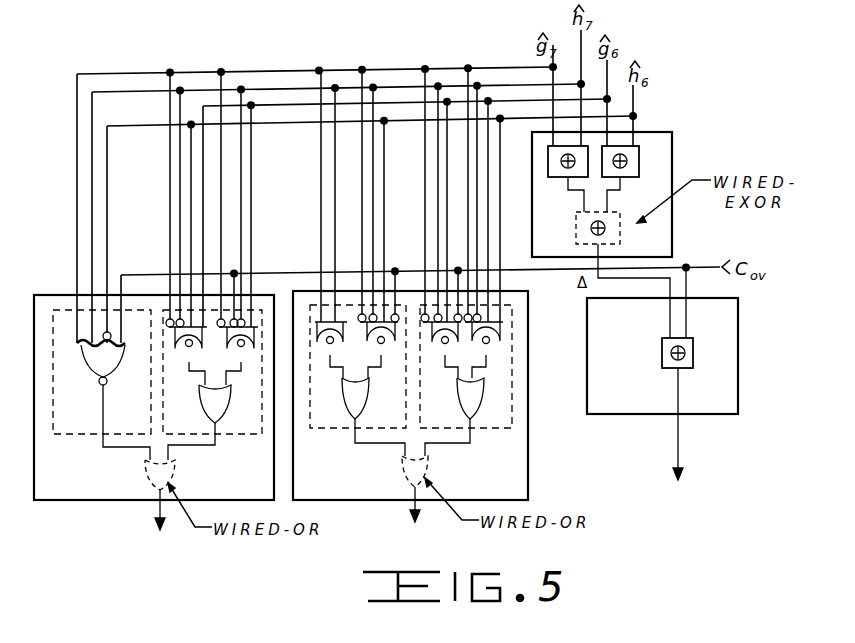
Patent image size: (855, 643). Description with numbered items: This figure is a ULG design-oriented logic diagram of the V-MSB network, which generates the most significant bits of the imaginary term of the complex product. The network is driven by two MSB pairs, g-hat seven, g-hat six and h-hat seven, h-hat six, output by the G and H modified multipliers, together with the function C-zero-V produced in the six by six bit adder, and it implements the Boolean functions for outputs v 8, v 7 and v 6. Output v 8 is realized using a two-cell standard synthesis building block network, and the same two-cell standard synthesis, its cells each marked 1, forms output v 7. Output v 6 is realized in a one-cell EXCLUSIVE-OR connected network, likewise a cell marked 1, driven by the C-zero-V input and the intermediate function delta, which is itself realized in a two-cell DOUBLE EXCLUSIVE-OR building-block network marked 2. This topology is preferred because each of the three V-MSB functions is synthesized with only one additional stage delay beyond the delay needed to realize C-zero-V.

The logic cell module 1 is at (140, 430).
The wired-EXOR module 2 is at (602, 195).
The output V6 of EXOR cell 6 is at (645, 379).
The output V7 of wired-OR cell 7 is at (415, 505).
The output V8 of wired-OR cell 8 is at (157, 513).